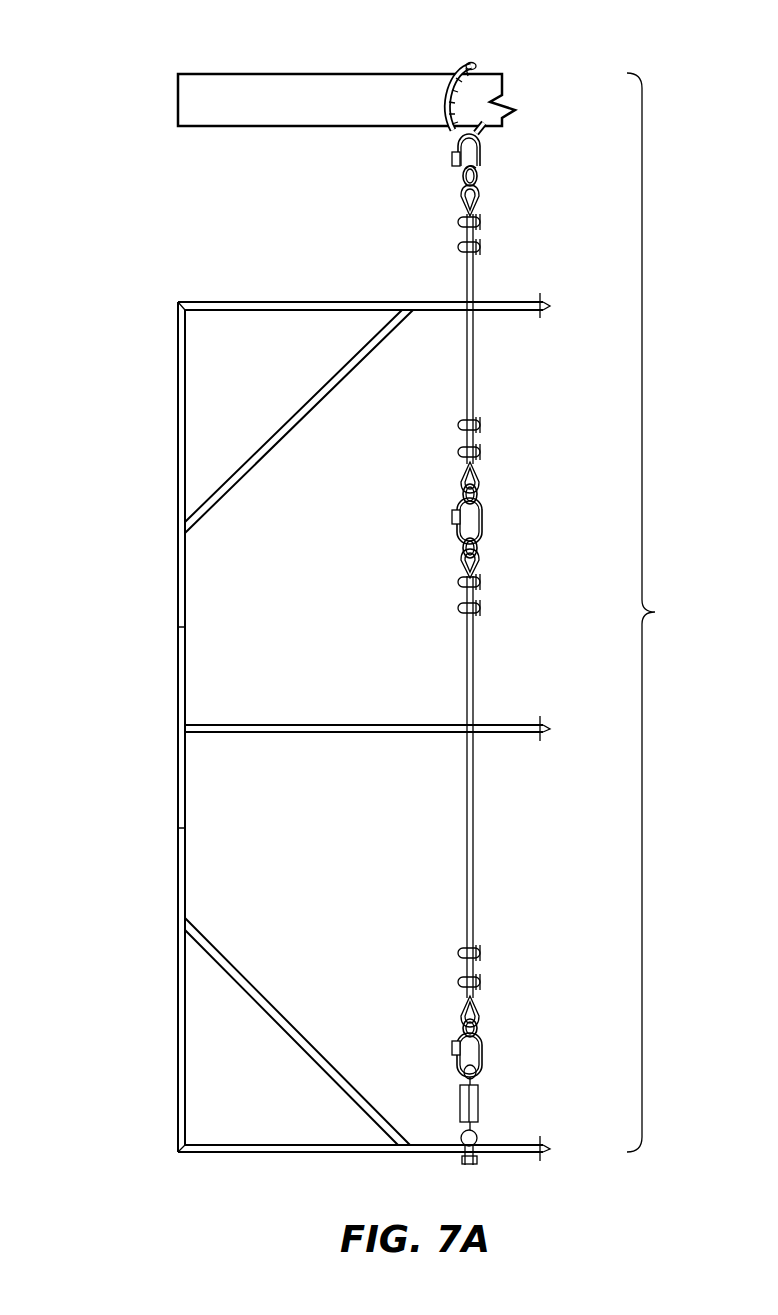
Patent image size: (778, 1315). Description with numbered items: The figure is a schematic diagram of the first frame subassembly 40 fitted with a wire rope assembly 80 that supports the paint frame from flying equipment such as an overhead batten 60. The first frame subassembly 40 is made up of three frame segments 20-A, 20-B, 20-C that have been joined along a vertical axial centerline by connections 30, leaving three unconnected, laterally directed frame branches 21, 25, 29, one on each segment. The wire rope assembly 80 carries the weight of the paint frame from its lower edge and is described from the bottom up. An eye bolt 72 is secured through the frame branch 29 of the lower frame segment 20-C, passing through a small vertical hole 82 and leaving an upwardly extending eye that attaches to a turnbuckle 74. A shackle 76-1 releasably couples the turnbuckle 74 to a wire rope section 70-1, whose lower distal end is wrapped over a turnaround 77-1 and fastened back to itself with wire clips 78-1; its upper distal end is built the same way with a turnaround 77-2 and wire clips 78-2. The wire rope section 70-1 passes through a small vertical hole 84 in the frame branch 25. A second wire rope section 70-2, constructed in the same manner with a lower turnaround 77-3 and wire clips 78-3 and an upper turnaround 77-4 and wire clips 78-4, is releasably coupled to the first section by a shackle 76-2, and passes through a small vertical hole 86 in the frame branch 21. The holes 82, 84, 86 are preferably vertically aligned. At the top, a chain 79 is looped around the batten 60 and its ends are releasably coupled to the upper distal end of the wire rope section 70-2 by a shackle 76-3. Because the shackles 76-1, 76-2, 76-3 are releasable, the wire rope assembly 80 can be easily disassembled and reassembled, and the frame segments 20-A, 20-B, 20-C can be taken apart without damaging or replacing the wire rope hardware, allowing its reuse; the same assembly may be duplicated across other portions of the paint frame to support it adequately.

The batten 60 is at (290, 74).
The chain 79 is at (473, 64).
The shackle 76-3 is at (482, 140).
The turnaround 77-4 is at (480, 176).
The wire clips 78-4 is at (480, 247).
The small vertical hole 86 is at (478, 293).
The wire rope section 70-2 is at (473, 360).
The wire clips 78-3 is at (480, 452).
The turnaround 77-3 is at (480, 488).
The shackle 76-2 is at (455, 517).
The turnaround 77-2 is at (480, 537).
The wire clips 78-2 is at (480, 608).
The small vertical hole 84 is at (478, 715).
The wire rope section 70-1 is at (473, 836).
The wire clips 78-1 is at (480, 982).
The turnaround 77-1 is at (480, 1030).
The shackle 76-1 is at (455, 1045).
The turnbuckle 74 is at (478, 1098).
The small vertical hole 82 is at (450, 1122).
The eye bolt 72 is at (478, 1136).
The wire rope assembly 80 is at (658, 612).
The first frame subassembly 40 is at (205, 217).
The frame segment 20-A is at (140, 302).
The frame segment 20-B is at (140, 707).
The frame segment 20-C is at (140, 967).
The frame branch 21 is at (262, 310).
The frame branch 25 is at (262, 725).
The frame branch 29 is at (262, 1145).
The connections 30 is at (215, 621).